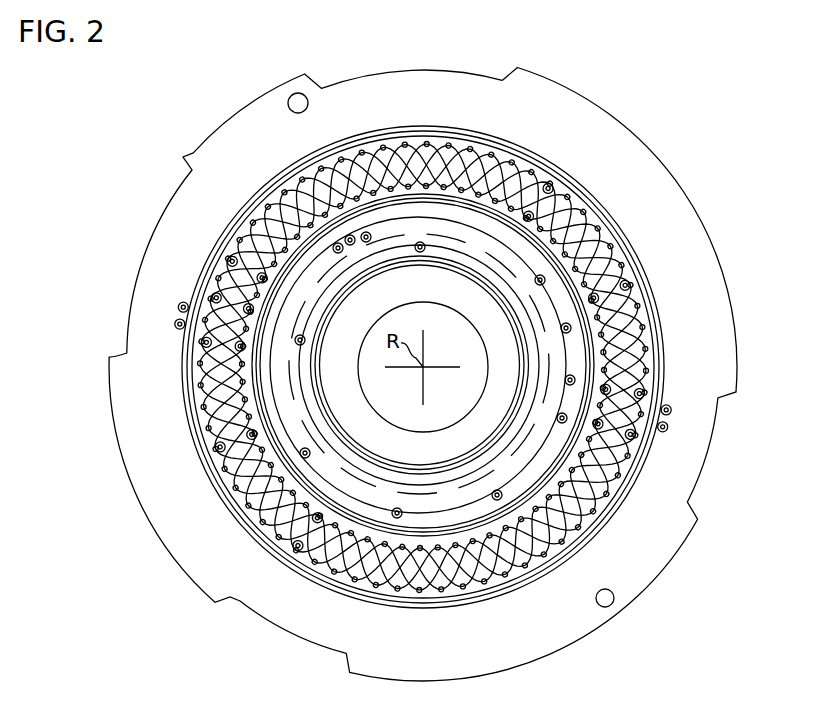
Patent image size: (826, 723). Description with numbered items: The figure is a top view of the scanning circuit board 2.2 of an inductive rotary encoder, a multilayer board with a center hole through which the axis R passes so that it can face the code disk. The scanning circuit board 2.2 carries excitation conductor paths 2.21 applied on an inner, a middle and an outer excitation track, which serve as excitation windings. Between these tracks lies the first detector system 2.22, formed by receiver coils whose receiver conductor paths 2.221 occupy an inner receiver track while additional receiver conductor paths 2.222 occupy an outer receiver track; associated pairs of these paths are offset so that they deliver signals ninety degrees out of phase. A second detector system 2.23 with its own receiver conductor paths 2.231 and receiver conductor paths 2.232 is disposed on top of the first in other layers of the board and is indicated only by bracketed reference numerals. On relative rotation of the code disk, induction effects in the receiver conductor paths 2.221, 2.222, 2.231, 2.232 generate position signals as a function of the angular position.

The scanning circuit board 2.2 is at (153, 225).
The excitation conductor paths 2.21 is at (505, 302).
The first detector system 2.22 is at (423, 398).
The second detector system 2.23 is at (315, 606).
The receiver conductor paths 2.221 is at (423, 389).
The receiver conductor paths 2.231 is at (443, 505).
The receiver conductor paths 2.222 is at (422, 401).
The receiver conductor paths 2.232 is at (441, 497).